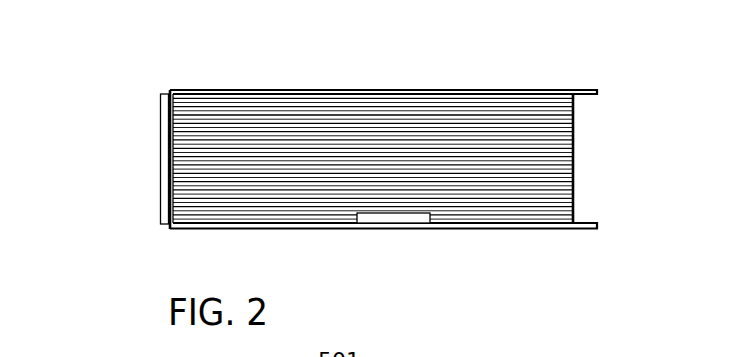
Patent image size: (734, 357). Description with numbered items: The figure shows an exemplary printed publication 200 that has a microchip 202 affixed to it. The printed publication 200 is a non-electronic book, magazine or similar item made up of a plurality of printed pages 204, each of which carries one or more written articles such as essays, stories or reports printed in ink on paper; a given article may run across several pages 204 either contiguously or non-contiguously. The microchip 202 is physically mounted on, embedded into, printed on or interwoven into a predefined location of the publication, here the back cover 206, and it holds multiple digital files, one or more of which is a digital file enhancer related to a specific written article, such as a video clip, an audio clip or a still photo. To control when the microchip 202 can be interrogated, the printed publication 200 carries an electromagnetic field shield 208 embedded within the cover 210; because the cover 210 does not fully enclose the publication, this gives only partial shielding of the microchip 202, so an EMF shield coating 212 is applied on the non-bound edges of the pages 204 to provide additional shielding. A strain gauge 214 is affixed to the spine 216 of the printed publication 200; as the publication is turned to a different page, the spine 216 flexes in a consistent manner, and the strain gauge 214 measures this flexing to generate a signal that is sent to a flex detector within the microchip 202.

The printed publication 200 is at (360, 151).
The microchip 202 is at (390, 218).
The pages 204 is at (432, 136).
The back cover 206 is at (595, 221).
The electromagnetic field shield 208 is at (500, 90).
The cover 210 is at (594, 90).
The EMF shield coating 212 is at (427, 158).
The strain gauge 214 is at (160, 152).
The spine 216 is at (170, 198).